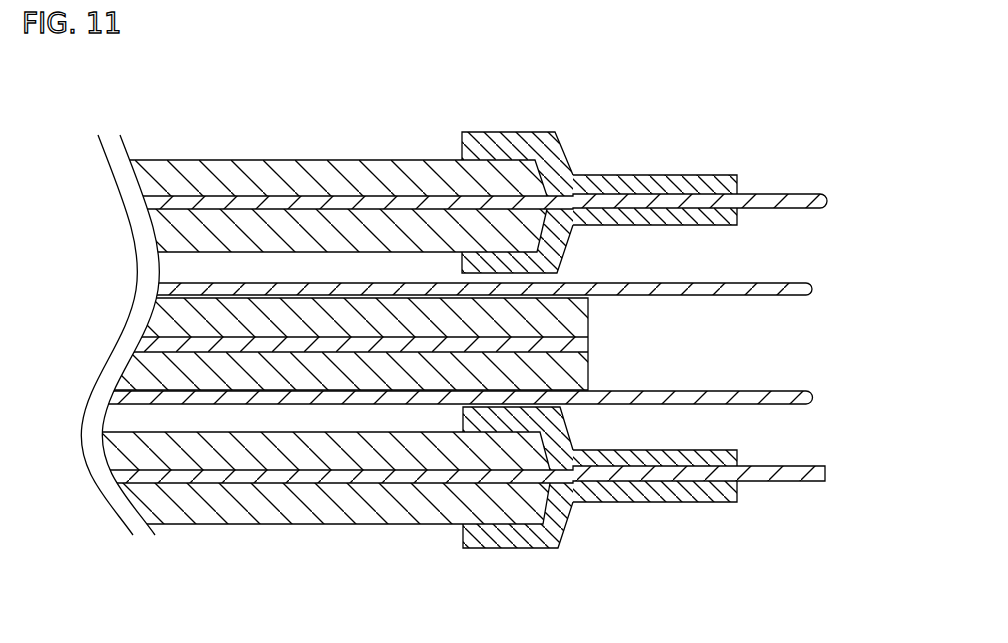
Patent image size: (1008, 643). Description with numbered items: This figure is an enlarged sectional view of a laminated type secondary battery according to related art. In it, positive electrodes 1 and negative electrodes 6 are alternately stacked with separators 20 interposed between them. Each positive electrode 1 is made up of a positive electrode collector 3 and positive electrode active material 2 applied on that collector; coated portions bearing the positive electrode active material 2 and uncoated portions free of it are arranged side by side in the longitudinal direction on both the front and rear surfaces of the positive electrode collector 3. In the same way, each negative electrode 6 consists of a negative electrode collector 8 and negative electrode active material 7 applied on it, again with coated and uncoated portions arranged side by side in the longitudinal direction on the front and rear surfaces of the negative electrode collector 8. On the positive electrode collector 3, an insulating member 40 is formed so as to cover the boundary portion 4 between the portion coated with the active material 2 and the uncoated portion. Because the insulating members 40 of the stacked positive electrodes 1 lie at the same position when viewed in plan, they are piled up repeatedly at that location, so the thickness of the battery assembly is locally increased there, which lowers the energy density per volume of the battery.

The positive electrode 1 is at (489, 361).
The positive electrode active material 2 is at (327, 517).
The positive electrode collector 3 is at (780, 477).
The boundary portion 4 is at (574, 227).
The negative electrode 6 is at (456, 351).
The negative electrode active material 7 is at (467, 313).
The negative electrode collector 8 is at (592, 337).
The separator 20 is at (795, 276).
The insulating member 40 is at (703, 217).